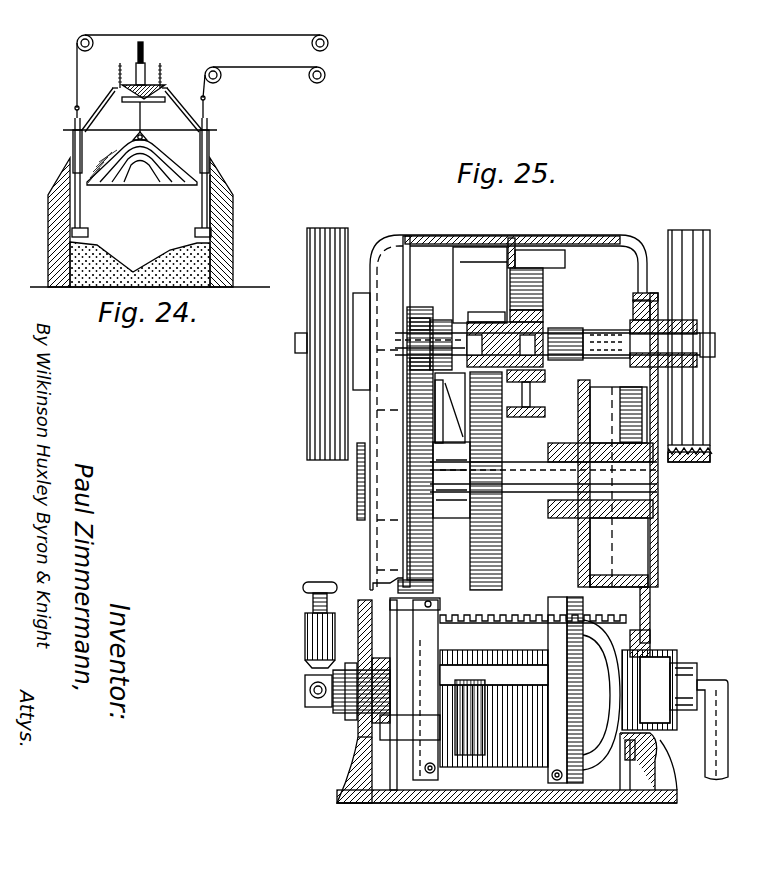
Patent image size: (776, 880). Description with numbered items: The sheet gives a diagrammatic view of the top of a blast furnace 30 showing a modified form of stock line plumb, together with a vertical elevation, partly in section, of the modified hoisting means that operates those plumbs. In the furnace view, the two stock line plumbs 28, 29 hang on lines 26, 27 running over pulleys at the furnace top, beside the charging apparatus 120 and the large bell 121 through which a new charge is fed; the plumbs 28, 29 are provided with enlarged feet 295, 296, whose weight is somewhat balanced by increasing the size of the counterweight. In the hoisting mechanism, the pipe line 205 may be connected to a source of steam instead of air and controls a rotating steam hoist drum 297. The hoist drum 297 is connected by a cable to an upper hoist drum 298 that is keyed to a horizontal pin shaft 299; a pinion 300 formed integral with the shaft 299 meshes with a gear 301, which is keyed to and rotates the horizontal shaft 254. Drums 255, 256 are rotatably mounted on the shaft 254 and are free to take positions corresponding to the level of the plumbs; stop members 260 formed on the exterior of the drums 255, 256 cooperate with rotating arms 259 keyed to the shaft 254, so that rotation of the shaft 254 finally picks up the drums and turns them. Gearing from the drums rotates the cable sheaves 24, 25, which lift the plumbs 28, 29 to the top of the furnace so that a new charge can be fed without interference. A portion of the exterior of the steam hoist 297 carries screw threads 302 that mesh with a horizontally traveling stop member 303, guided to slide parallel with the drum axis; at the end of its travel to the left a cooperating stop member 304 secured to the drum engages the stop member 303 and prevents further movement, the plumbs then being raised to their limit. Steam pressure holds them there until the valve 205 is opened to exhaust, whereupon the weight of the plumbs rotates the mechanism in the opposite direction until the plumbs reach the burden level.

In FIG. 24, the cable 26 is at (222, 38).
In FIG. 24, the cable 27 is at (233, 69).
In FIG. 24, the hopper 120 is at (150, 94).
In FIG. 24, the stock line plumb 28 is at (81, 198).
In FIG. 24, the bell 121 is at (150, 178).
In FIG. 24, the stock line plumb 29 is at (201, 210).
In FIG. 24, the enlarged foot 296 is at (220, 228).
In FIG. 24, the enlarged foot 295 is at (89, 234).
In FIG. 24, the furnace 30 is at (234, 235).
In FIG. 25, the sheave 25 is at (348, 242).
In FIG. 25, the sheave 24 is at (710, 239).
In FIG. 25, the upper hoist drum 298 is at (537, 263).
In FIG. 25, the pinion 300 is at (472, 317).
In FIG. 25, the horizontal pin shaft 299 is at (495, 315).
In FIG. 25, the stop member 260 is at (648, 412).
In FIG. 25, the rotating arm 259 is at (570, 423).
In FIG. 25, the horizontal shaft 254 is at (522, 495).
In FIG. 25, the drum 255 is at (585, 556).
In FIG. 25, the drum 256 is at (407, 547).
In FIG. 25, the gear 301 is at (472, 551).
In FIG. 25, the screw threads 302 is at (486, 612).
In FIG. 25, the cooperating stop member 304 is at (438, 632).
In FIG. 25, the steam hoist drum 297 is at (593, 625).
In FIG. 25, the stop member 303 is at (362, 737).
In FIG. 25, the pipe line 205 is at (728, 745).